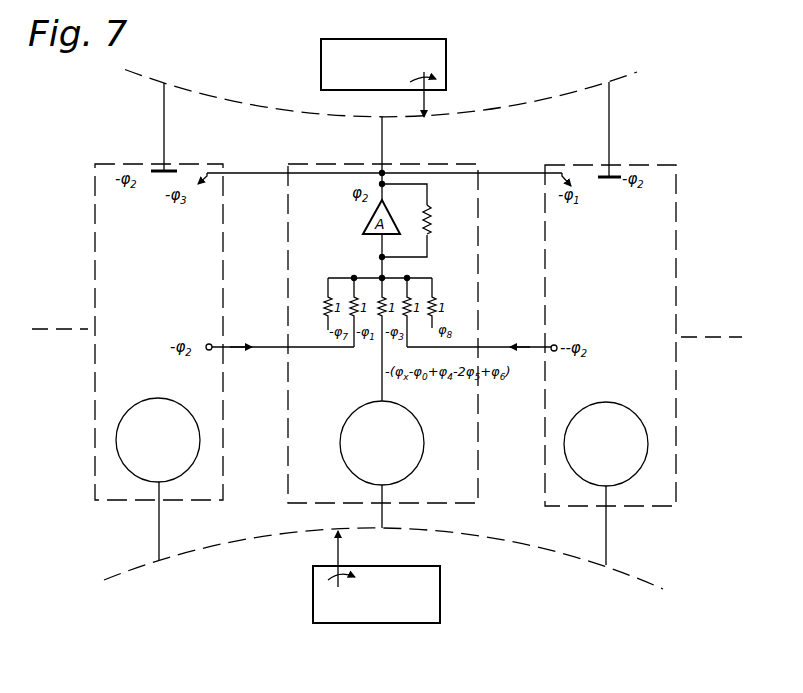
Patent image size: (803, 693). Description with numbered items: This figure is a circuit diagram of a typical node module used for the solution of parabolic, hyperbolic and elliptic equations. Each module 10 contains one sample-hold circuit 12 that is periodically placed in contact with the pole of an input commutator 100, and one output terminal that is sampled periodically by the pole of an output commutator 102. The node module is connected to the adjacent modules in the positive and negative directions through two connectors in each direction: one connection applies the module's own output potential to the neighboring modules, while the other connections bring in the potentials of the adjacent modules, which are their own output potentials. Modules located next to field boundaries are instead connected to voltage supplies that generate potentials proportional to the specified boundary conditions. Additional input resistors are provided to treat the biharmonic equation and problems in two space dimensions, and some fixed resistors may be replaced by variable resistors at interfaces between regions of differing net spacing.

The module 10 is at (95, 178).
The sample-hold circuit 12 is at (173, 401).
The input commutator 100 is at (440, 595).
The output commutator 102 is at (446, 54).